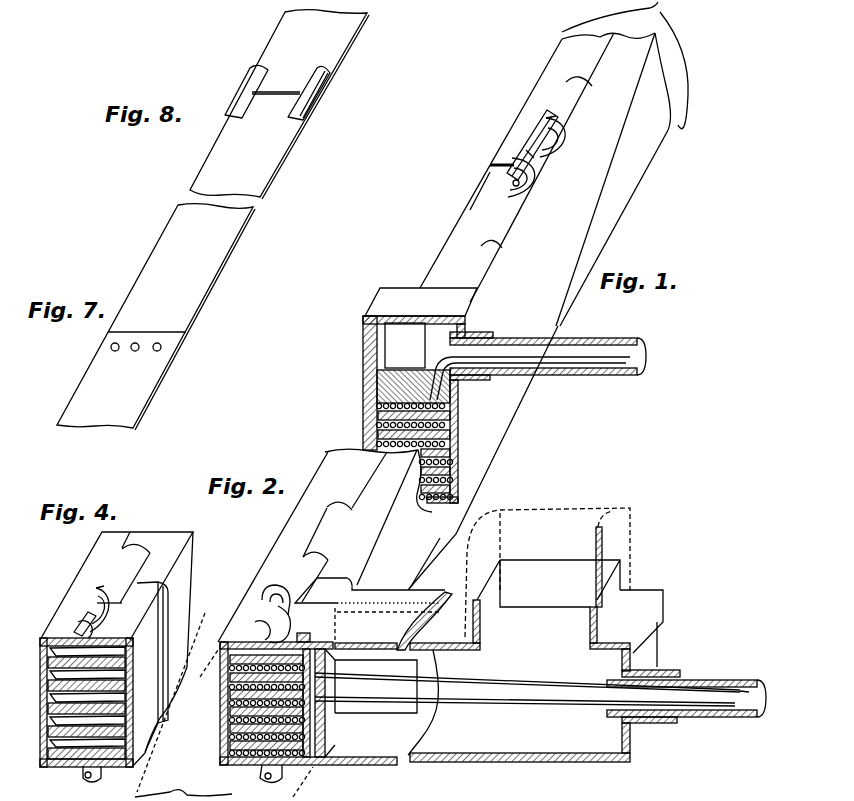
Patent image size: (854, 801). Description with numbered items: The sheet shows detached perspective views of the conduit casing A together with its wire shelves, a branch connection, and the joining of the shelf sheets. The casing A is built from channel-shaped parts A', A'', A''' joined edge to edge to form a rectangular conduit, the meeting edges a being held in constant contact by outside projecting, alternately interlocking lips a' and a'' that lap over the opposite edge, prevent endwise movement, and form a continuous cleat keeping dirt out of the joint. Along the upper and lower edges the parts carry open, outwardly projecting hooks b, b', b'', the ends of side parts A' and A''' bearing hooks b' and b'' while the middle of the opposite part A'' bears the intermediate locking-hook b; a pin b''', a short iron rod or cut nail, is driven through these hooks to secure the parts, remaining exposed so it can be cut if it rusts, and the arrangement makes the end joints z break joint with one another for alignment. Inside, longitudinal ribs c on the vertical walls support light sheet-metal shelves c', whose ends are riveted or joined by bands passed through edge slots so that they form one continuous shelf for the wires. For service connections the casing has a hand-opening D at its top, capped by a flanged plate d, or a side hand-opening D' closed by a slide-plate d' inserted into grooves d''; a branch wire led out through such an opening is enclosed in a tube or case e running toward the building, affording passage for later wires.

In FIG. 1, the casing A is at (625, 66).
In FIG. 2, the casing A is at (441, 625).
In FIG. 1, the side part of casing A' is at (491, 163).
In FIG. 1, the opposite side part of casing A'' is at (537, 311).
In FIG. 1, the side part of casing A''' is at (469, 191).
In FIG. 4, the meeting edges a is at (83, 704).
In FIG. 1, the interlocking lip a' is at (535, 177).
In FIG. 2, the interlocking lip a' is at (342, 527).
In FIG. 4, the interlocking lip a' is at (123, 567).
In FIG. 1, the interlocking lip a'' is at (546, 160).
In FIG. 2, the interlocking lip a'' is at (327, 531).
In FIG. 1, the intermediate locking-hook b is at (522, 145).
In FIG. 2, the intermediate locking-hook b is at (275, 702).
In FIG. 4, the intermediate locking-hook b is at (86, 701).
In FIG. 1, the lug or hook b' is at (561, 136).
In FIG. 2, the lug or hook b' is at (276, 594).
In FIG. 4, the lug or hook b' is at (94, 604).
In FIG. 1, the lug or hook b'' is at (531, 183).
In FIG. 1, the pin b''' is at (548, 162).
In FIG. 2, the pin b''' is at (254, 709).
In FIG. 4, the pin b''' is at (70, 705).
In FIG. 4, the ribs c is at (86, 708).
In FIG. 8, the shelves c' is at (279, 104).
In FIG. 7, the shelves c' is at (156, 317).
In FIG. 4, the shelves c' is at (87, 693).
In FIG. 1, the flanged plate d is at (420, 395).
In FIG. 2, the slide-plate d' is at (425, 699).
In FIG. 4, the slide-plate d' is at (97, 702).
In FIG. 2, the grooves d'' is at (479, 631).
In FIG. 4, the grooves d'' is at (126, 649).
In FIG. 1, the hand-opening D is at (405, 345).
In FIG. 2, the side hand-opening D' is at (376, 683).
In FIG. 1, the tube or case e is at (612, 339).
In FIG. 2, the tube or case e is at (745, 682).
In FIG. 1, the end joints z is at (491, 159).